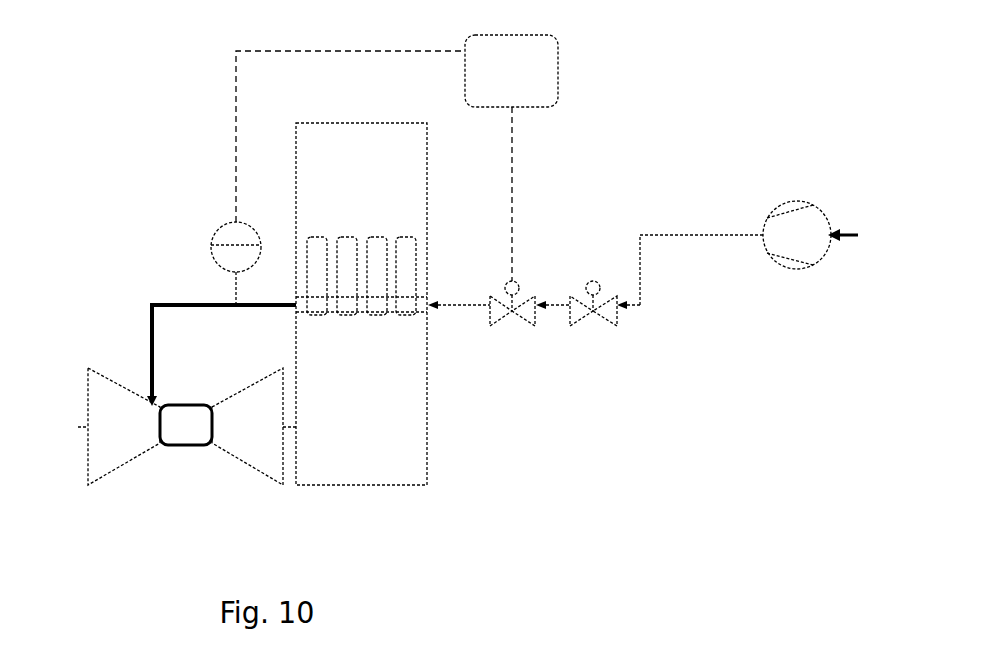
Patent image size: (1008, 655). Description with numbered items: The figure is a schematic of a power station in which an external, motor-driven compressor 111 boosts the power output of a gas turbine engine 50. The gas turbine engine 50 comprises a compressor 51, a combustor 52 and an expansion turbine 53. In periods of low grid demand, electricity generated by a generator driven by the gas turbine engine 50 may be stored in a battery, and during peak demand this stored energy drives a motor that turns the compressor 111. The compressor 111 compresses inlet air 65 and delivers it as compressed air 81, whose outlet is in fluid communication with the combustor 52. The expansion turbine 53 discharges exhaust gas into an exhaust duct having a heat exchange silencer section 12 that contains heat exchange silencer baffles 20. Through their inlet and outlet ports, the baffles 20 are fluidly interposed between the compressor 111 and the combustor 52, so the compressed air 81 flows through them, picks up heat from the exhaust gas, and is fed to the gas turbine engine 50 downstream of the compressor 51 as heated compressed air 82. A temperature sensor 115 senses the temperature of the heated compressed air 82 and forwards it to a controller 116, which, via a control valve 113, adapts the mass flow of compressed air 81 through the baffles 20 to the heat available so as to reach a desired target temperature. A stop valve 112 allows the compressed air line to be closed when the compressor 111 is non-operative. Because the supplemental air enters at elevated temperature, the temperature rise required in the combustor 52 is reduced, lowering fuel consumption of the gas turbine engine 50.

The heat exchange silencer section 12 is at (345, 420).
The heat exchange silencer baffles 20 is at (403, 265).
The gas turbine engine 50 is at (113, 350).
The compressor 51 is at (137, 436).
The combustor 52 is at (185, 430).
The expansion turbine 53 is at (237, 436).
The inlet air 65 is at (849, 228).
The compressed air 81 is at (647, 231).
The heated compressed air 82 is at (152, 305).
The compressor 111 is at (790, 266).
The stop valve 112 is at (598, 314).
The control valve 113 is at (505, 312).
The temperature sensor 115 is at (221, 228).
The controller 116 is at (484, 84).